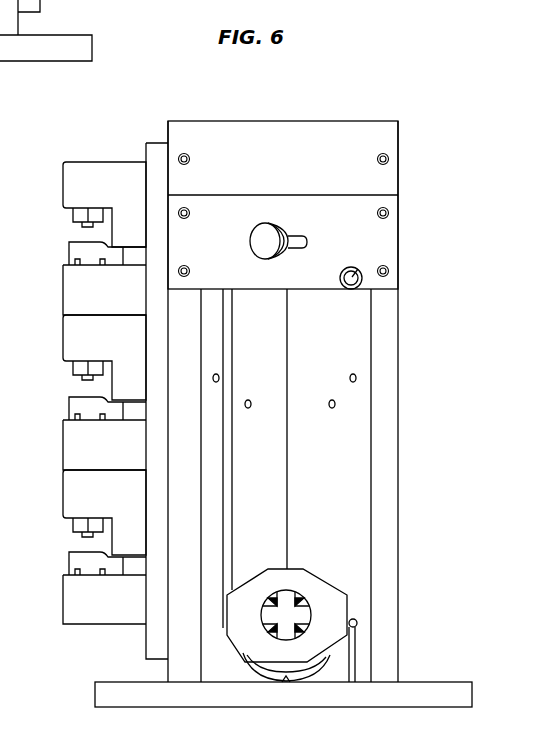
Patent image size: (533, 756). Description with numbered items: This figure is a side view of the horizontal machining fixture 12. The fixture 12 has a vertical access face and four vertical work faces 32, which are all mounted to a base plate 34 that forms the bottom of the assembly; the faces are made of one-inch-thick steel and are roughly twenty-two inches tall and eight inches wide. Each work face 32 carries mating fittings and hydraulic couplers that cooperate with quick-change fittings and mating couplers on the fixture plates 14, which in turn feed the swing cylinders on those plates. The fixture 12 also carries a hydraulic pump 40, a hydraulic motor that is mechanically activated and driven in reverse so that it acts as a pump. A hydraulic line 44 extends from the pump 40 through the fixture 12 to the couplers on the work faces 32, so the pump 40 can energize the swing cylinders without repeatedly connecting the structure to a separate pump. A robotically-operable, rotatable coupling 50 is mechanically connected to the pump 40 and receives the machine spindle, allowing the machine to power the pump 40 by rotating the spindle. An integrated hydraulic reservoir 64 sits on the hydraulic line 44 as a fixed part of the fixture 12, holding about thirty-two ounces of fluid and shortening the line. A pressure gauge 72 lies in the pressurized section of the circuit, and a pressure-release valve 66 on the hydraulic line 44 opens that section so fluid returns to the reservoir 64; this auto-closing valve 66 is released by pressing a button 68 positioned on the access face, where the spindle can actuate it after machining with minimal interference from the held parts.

The fixture 12 is at (400, 566).
The fixture plate 14 is at (157, 152).
The vertical work face 32 is at (398, 316).
The base plate 34 is at (460, 694).
The hydraulic pump 40 is at (313, 582).
The hydraulic line 44 is at (352, 650).
The rotatable coupling 50 is at (257, 640).
The hydraulic reservoir 64 is at (333, 215).
The pressure-release valve 66 is at (356, 281).
The button 68 is at (358, 269).
The pressure gauge 72 is at (267, 224).